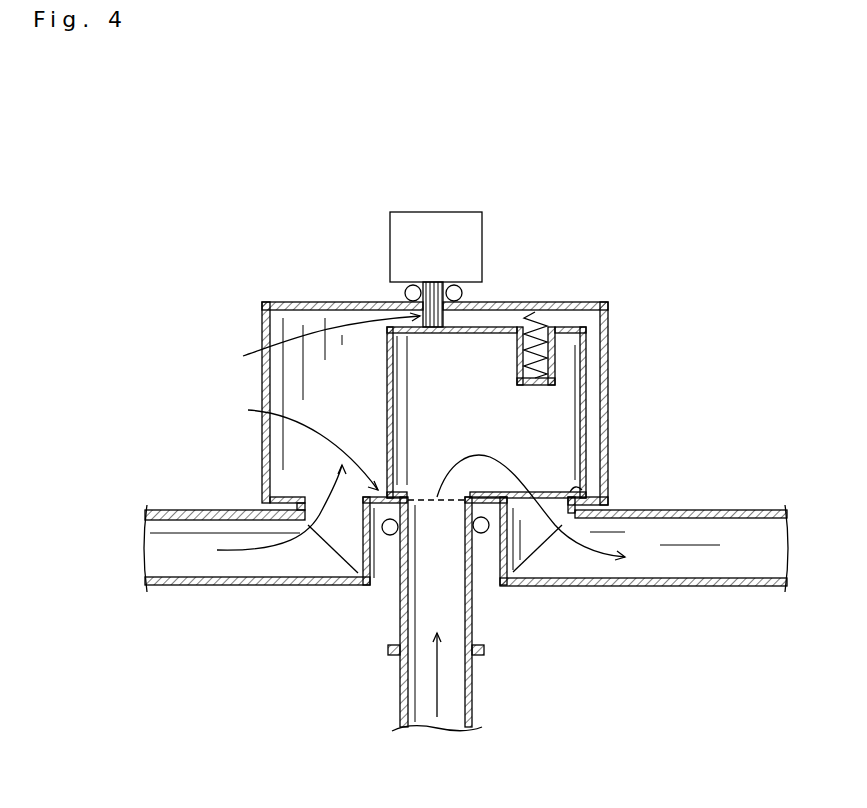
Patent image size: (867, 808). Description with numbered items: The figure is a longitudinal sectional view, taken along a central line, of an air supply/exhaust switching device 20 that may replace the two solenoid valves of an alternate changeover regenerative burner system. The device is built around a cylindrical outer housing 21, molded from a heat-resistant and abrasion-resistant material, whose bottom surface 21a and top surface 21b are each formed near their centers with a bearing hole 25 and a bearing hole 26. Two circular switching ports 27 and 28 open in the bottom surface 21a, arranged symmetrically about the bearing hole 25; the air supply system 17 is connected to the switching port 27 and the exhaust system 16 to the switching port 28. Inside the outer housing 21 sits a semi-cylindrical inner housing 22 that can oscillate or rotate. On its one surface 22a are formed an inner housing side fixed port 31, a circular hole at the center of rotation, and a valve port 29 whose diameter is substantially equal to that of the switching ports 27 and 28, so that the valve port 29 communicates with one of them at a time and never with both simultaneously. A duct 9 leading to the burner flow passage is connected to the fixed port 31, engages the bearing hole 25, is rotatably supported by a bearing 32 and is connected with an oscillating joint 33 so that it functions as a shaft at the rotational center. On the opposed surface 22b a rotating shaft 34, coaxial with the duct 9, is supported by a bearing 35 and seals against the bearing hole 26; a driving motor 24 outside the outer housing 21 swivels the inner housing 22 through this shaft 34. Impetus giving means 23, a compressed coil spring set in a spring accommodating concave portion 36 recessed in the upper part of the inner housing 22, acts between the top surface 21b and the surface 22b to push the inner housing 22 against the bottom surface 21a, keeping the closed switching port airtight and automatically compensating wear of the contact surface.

The air supply/exhaust switching device 20 is at (223, 236).
The outer housing 21 is at (262, 446).
The bottom surface 21a is at (285, 491).
The top surface 21b is at (312, 304).
The inner housing 22 is at (583, 398).
The one surface of the inner housing 22a is at (585, 490).
The opposed surface of the inner housing 22b is at (490, 326).
The impetus giving means 23 is at (540, 322).
The driving motor 24 is at (440, 228).
The bearing hole 25 is at (292, 438).
The bearing hole 26 is at (313, 343).
The switching port 27 is at (368, 548).
The switching port 28 is at (527, 514).
The valve port 29 is at (560, 468).
The inner housing side fixed port 31 is at (437, 517).
The bearing 32 is at (484, 534).
The oscillating joint 33 is at (482, 657).
The rotating shaft 34 is at (442, 284).
The bearing 35 is at (404, 292).
The spring accommodating concave portion 36 is at (556, 356).
The duct 9 is at (408, 696).
The exhaust system 16 is at (697, 586).
The air supply system 17 is at (197, 586).